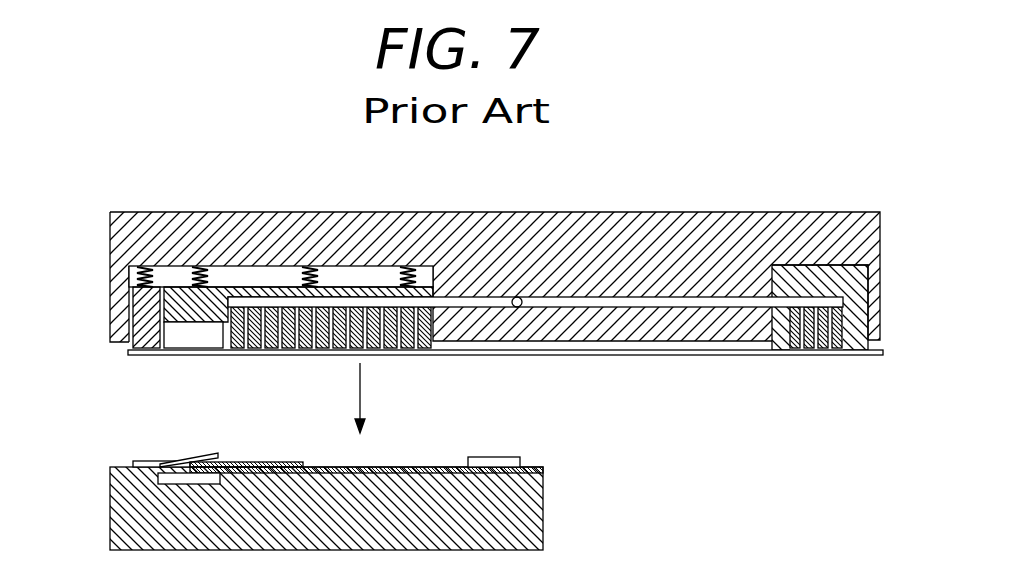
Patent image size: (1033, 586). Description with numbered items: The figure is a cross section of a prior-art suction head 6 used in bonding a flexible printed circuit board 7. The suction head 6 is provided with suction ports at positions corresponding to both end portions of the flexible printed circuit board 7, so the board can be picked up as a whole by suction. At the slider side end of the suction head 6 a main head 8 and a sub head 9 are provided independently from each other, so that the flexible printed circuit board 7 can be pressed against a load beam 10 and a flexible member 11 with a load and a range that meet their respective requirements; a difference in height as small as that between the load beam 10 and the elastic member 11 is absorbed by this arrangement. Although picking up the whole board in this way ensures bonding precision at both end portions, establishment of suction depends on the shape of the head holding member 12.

The suction head 6 is at (646, 186).
The flexible printed circuit board 7 is at (713, 356).
The main head 8 is at (214, 297).
The sub head 9 is at (138, 297).
The load beam 10 is at (395, 465).
The flexible member 11 is at (282, 461).
The head holding member 12 is at (432, 434).